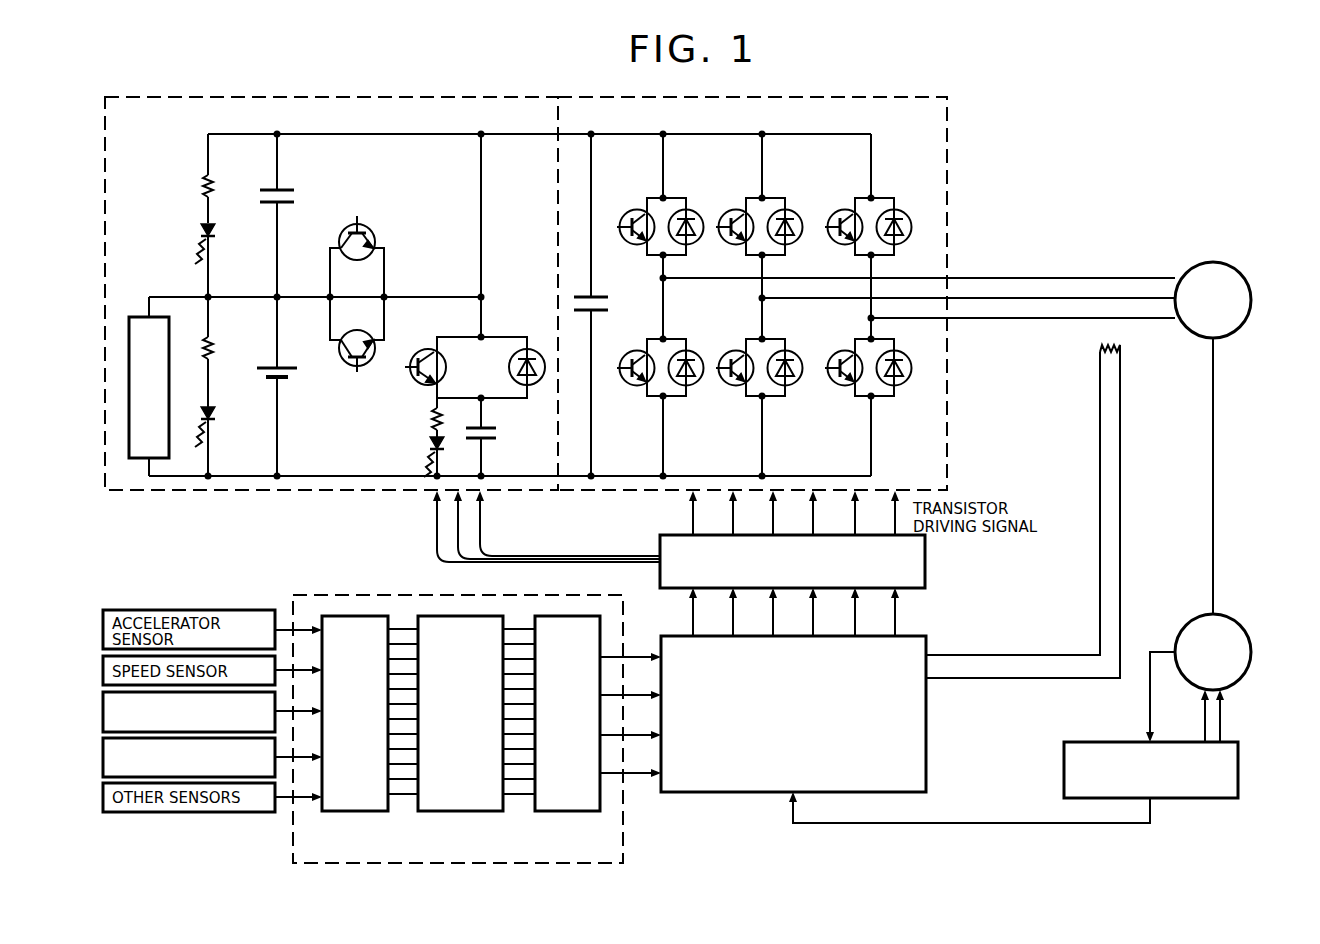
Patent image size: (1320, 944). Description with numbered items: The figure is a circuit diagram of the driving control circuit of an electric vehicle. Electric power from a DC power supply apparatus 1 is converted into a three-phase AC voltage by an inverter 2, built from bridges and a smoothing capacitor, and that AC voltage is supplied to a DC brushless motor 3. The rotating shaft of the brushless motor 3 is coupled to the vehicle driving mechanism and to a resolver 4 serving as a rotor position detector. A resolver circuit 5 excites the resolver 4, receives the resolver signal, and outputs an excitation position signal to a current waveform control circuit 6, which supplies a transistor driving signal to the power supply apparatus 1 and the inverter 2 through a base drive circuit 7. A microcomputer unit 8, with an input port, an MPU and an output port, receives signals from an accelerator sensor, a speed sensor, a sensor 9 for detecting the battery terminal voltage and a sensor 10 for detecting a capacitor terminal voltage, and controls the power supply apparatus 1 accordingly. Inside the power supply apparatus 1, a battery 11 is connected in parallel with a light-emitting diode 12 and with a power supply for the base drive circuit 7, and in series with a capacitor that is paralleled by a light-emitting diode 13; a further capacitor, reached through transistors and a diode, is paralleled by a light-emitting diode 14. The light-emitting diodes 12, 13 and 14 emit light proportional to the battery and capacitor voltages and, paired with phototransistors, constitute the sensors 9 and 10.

The DC power supply apparatus 1 is at (228, 492).
The inverter 2 is at (947, 185).
The DC brushless motor 3 is at (1213, 262).
The resolver 4 is at (1197, 620).
The resolver circuit 5 is at (1064, 768).
The current waveform control circuit 6 is at (926, 637).
The base drive circuit 7 is at (925, 560).
The microcomputer unit 8 is at (352, 595).
The battery voltage sensor 9 is at (103, 703).
The capacitor voltage sensor 10 is at (103, 752).
The battery 11 is at (293, 372).
The light-emitting diode 12 is at (212, 414).
The light-emitting diode 13 is at (212, 231).
The light-emitting diode 14 is at (432, 445).